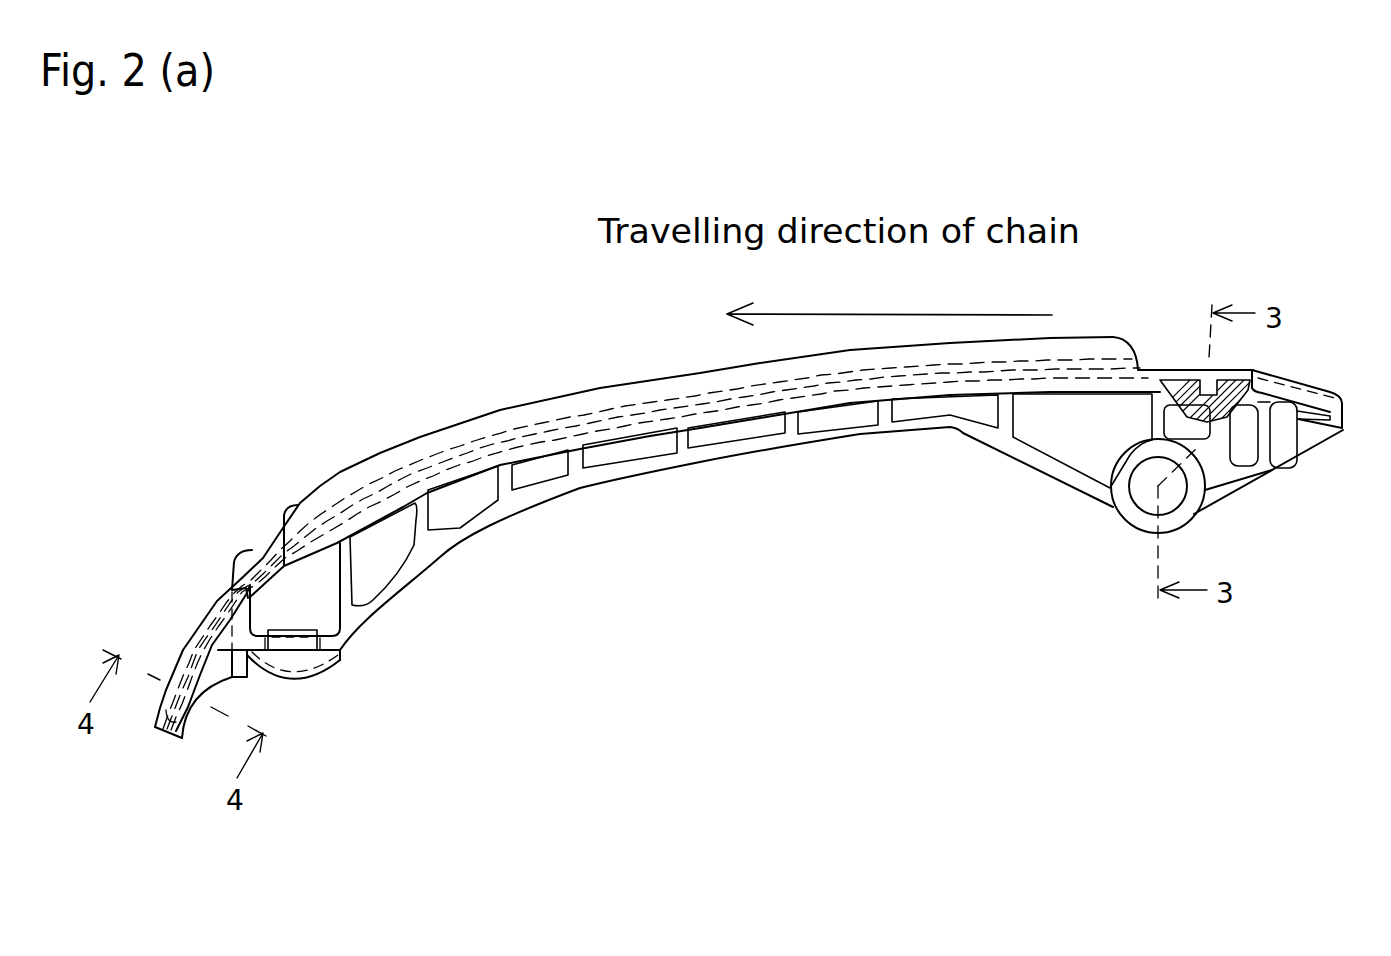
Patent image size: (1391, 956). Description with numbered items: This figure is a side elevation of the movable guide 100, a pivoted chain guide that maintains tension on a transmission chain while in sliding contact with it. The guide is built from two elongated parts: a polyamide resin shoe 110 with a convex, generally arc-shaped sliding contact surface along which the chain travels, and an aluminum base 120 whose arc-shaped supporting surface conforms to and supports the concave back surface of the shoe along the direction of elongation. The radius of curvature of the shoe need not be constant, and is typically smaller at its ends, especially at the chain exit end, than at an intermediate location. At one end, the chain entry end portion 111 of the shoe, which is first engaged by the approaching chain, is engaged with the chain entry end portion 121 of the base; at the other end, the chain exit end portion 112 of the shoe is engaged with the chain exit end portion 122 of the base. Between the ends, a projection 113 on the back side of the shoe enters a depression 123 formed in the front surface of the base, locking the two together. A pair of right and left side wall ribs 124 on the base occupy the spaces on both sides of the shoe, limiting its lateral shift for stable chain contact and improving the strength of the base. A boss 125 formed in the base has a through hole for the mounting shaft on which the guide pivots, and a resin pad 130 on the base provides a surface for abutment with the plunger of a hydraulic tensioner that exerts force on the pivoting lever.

The movable guide 100 is at (537, 343).
The shoe 110 is at (215, 622).
The chain entry end portion 111 is at (1345, 418).
The chain exit end portion 112 is at (187, 737).
The projection 113 is at (1202, 378).
The base 120 is at (628, 468).
The chain entry end portion 121 is at (1287, 402).
The chain exit end portion 122 is at (183, 697).
The depression 123 is at (1258, 392).
The side wall ribs 124 is at (334, 486).
The boss 125 is at (1133, 512).
The resin pad 130 is at (315, 661).